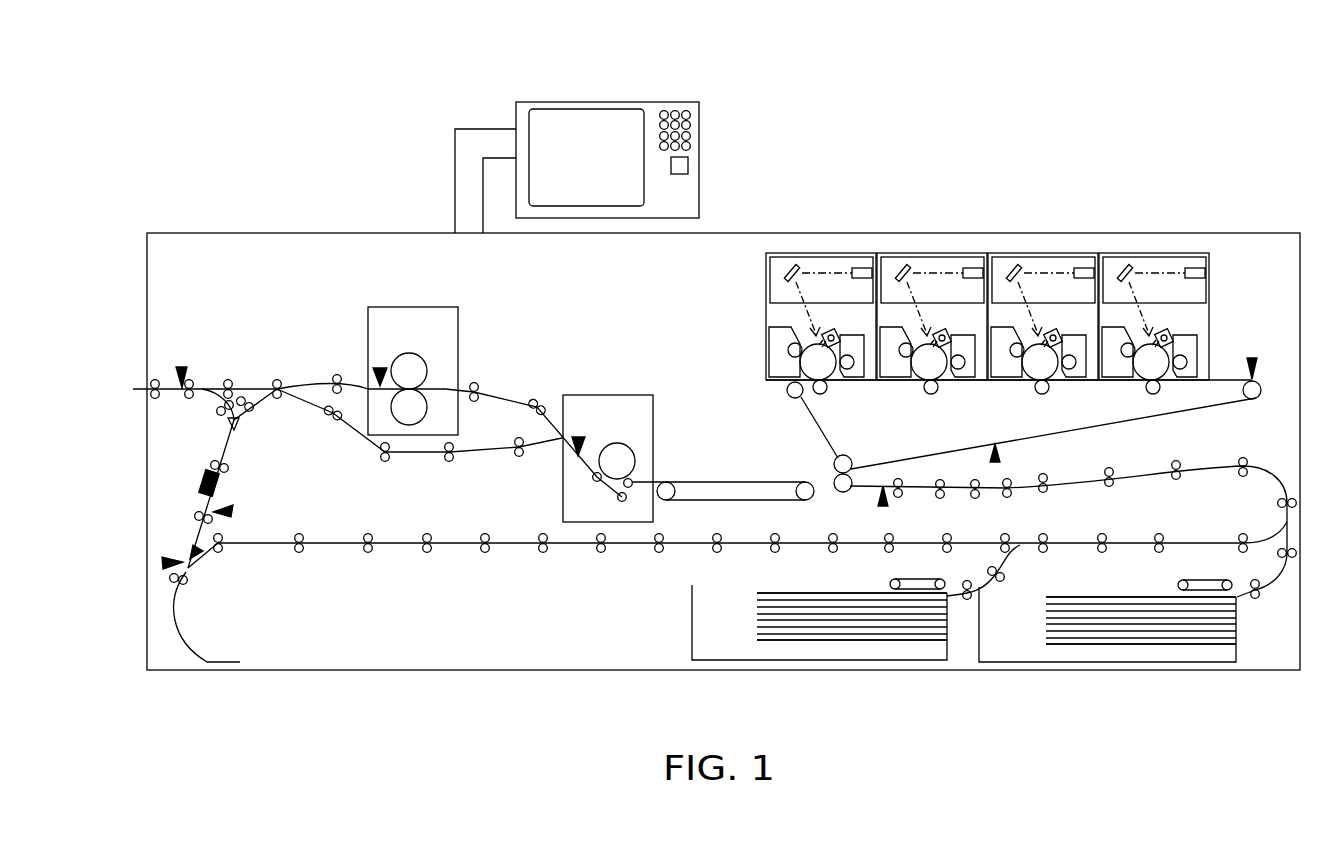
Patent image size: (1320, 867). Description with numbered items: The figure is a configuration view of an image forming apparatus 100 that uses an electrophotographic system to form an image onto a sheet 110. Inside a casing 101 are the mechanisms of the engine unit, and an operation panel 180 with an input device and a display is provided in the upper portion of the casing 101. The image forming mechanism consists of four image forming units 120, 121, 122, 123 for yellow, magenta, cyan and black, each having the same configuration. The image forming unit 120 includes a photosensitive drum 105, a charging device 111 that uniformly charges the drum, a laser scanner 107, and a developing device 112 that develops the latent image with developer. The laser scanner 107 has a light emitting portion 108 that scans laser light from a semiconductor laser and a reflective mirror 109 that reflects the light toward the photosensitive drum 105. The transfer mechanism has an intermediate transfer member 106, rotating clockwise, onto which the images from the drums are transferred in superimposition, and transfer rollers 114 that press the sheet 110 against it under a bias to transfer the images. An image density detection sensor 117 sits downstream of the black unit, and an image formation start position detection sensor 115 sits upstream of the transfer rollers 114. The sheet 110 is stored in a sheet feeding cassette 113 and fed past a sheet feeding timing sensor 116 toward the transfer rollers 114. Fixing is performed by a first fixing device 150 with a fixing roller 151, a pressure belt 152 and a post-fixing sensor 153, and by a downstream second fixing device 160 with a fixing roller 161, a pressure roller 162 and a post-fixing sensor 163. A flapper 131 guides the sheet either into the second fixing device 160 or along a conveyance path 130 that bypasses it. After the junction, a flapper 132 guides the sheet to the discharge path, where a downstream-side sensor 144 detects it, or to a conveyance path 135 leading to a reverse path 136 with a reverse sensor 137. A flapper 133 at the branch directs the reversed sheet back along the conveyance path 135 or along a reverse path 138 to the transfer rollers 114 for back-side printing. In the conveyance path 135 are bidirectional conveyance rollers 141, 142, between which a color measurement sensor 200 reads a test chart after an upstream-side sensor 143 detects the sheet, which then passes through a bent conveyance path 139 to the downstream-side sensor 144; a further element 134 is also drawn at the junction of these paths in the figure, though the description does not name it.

The image forming apparatus 100 is at (995, 105).
The casing 101 is at (1268, 233).
The photosensitive drum 105 is at (830, 386).
The intermediate transfer member 106 is at (792, 402).
The laser scanner 107 is at (809, 257).
The light emitting portion 108 is at (862, 268).
The reflective mirror 109 is at (785, 268).
The sheet 110 is at (838, 593).
The charging device 111 is at (817, 338).
The developing device 112 is at (773, 348).
The sheet feeding cassette 113 is at (692, 623).
The transfer rollers 114 is at (838, 494).
The image formation start position detection sensor 115 is at (1000, 458).
The sheet feeding timing sensor 116 is at (888, 498).
The image density detection sensor 117 is at (1253, 357).
The image forming unit 120 is at (790, 266).
The image forming unit 121 is at (952, 256).
The image forming unit 122 is at (1063, 256).
The image forming unit 123 is at (1180, 256).
The conveyance path 130 is at (422, 456).
The flapper 131 is at (555, 448).
The flapper 132 is at (274, 384).
The flapper 133 is at (203, 553).
The switching gate 134 is at (240, 428).
The conveyance path 135 is at (218, 484).
The reverse path 136 is at (205, 662).
The reverse sensor 137 is at (192, 574).
The reverse path 138 is at (326, 542).
The conveyance path 139 is at (213, 401).
The conveyance rollers 141 is at (195, 514).
The conveyance rollers 142 is at (214, 461).
The upstream-side sensor 143 is at (235, 513).
The downstream-side sensor 144 is at (180, 366).
The first fixing device 150 is at (654, 410).
The fixing roller 151 is at (612, 444).
The pressure belt 152 is at (597, 482).
The post-fixing sensor 153 is at (578, 436).
The second fixing device 160 is at (457, 313).
The fixing roller 161 is at (408, 353).
The pressure roller 162 is at (440, 388).
The post-fixing sensor 163 is at (372, 370).
The operation panel 180 is at (648, 102).
The color measurement sensor 200 is at (200, 479).